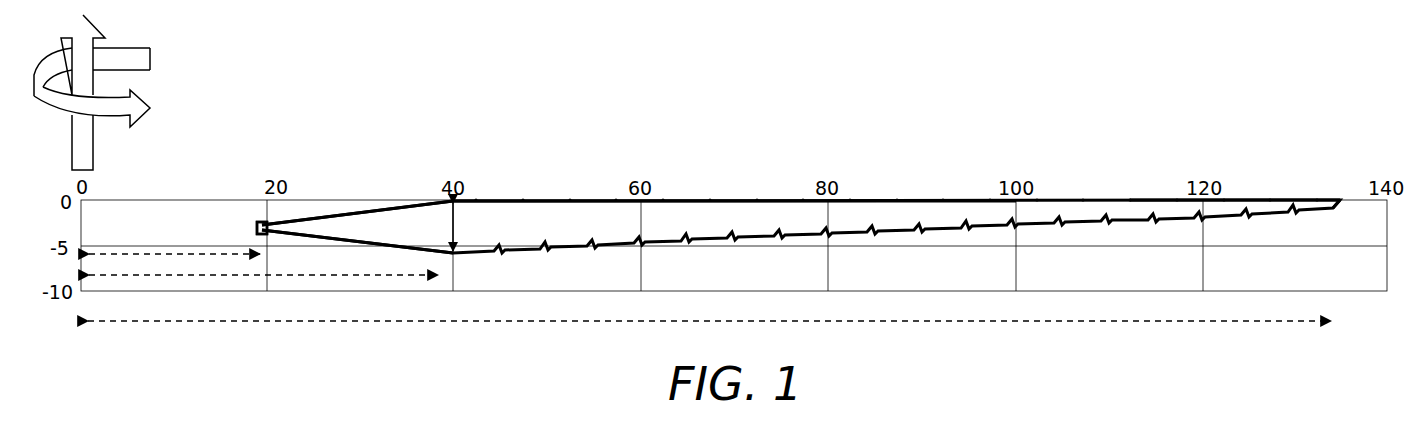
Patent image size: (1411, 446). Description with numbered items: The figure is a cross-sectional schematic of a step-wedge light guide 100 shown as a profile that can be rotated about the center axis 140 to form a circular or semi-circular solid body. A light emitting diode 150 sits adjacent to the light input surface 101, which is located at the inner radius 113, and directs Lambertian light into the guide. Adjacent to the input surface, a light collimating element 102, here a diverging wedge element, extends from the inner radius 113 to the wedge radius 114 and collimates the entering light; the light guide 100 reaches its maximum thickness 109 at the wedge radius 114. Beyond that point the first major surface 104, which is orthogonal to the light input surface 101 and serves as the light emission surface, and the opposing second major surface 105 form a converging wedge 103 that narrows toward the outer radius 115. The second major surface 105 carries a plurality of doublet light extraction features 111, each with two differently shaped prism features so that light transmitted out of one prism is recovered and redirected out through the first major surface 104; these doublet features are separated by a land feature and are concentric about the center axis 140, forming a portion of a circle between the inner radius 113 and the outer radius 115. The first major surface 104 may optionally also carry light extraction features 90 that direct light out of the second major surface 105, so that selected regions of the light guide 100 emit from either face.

The light extraction features 90 is at (1096, 198).
The step-wedge light guide 100 is at (549, 198).
The light input surface 101 is at (266, 234).
The light collimating element 102 is at (362, 226).
The converging wedge 103 is at (725, 225).
The first major surface 104 is at (1137, 198).
The second major surface 105 is at (1109, 230).
The maximum thickness 109 is at (455, 222).
The doublet light extraction features 111 is at (909, 230).
The inner radius 113 is at (174, 241).
The wedge radius 114 is at (263, 290).
The outer radius 115 is at (709, 336).
The center axis 140 is at (150, 60).
The light emitting diode 150 is at (258, 223).